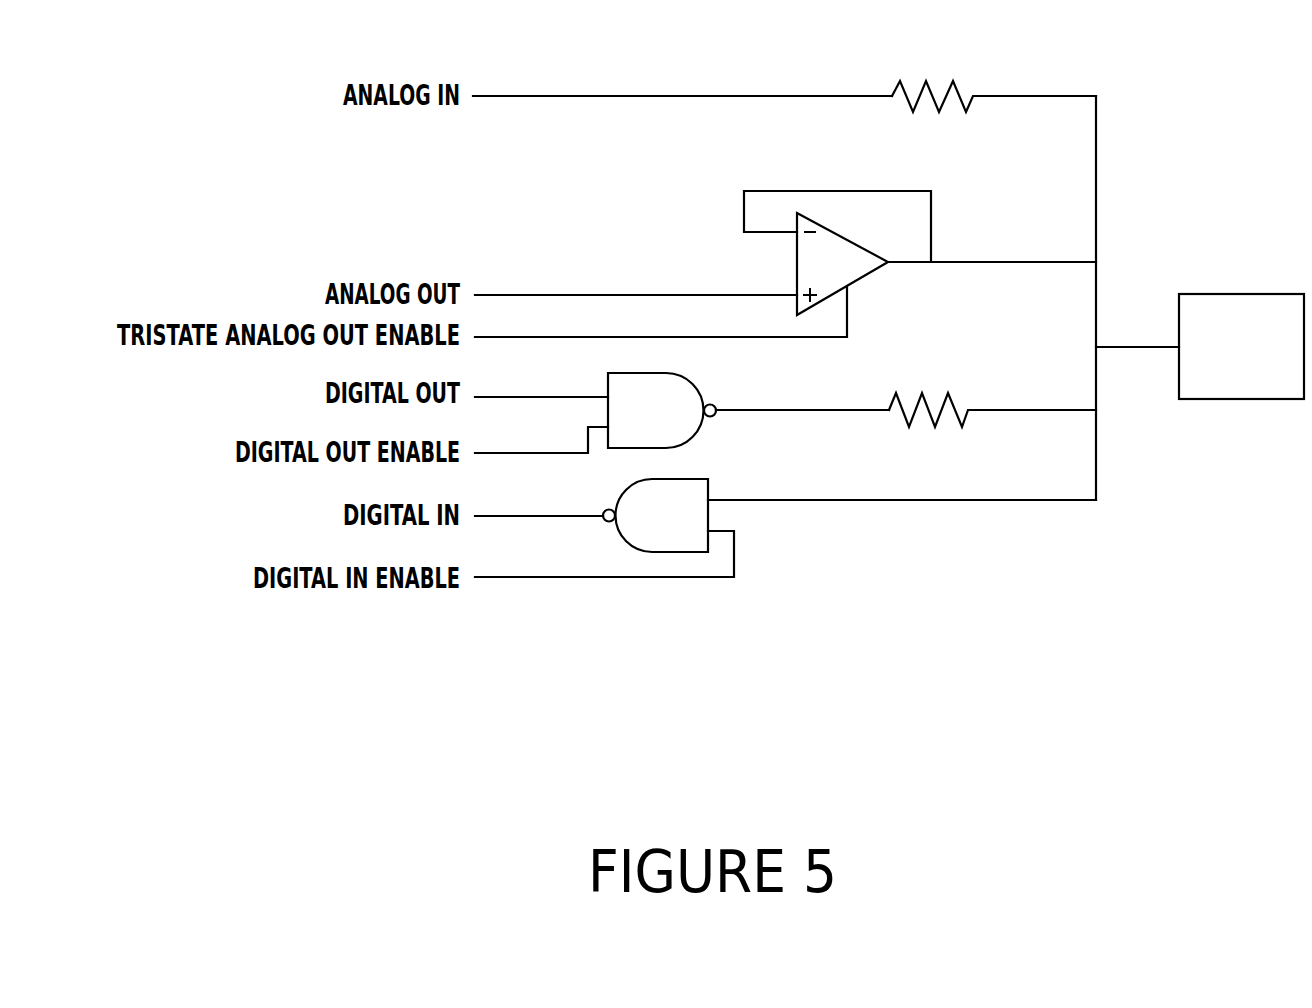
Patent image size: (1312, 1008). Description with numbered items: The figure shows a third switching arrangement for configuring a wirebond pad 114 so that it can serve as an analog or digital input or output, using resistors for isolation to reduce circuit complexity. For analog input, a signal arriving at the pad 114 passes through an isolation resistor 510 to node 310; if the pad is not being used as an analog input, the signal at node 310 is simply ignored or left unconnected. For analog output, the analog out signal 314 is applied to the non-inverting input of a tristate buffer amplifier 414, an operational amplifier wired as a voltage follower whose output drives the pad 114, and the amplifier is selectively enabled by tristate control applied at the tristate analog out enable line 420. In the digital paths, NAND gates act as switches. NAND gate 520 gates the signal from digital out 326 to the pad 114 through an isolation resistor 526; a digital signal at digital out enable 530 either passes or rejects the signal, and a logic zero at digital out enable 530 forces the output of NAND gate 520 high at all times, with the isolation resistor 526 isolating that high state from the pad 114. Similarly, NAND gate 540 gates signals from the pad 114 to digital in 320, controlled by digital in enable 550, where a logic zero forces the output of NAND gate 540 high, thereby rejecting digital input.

The node 310 is at (598, 95).
The isolation resistor 510 is at (933, 83).
The tristate buffer amplifier 414 is at (838, 234).
The analog out signal 314 is at (714, 293).
The tristate analog out enable line 420 is at (497, 335).
The digital out 326 is at (492, 395).
The digital out enable 530 is at (492, 452).
The NAND gate 520 is at (675, 372).
The isolation resistor 526 is at (935, 400).
The NAND gate 540 is at (697, 478).
The digital in 320 is at (492, 515).
The digital in enable 550 is at (492, 576).
The pad 114 is at (1259, 380).